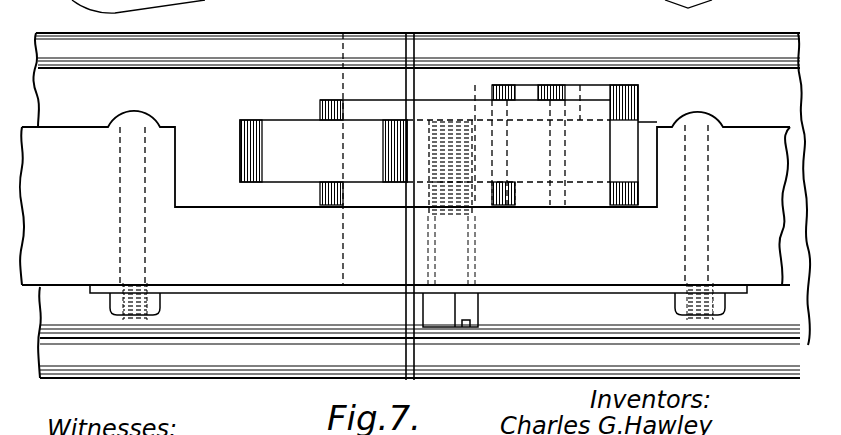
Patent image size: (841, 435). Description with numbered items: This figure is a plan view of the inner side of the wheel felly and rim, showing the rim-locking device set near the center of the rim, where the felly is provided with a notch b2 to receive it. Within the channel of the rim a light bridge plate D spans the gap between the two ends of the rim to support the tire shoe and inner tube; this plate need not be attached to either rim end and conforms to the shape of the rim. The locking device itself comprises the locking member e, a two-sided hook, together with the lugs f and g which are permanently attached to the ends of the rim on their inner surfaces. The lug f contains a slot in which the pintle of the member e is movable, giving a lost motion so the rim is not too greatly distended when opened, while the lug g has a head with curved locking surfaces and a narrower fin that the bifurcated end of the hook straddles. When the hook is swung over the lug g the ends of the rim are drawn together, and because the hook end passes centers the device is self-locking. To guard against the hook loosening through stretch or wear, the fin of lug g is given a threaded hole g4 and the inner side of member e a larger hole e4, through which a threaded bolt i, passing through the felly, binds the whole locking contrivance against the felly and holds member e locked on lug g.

The rail b is at (527, 42).
The notch b2 is at (178, 158).
The bridge plate D is at (410, 352).
The locking member e is at (430, 103).
The hole e4 is at (428, 175).
The lug f is at (323, 151).
The lug g is at (538, 85).
The threaded hole g4 is at (515, 190).
The threaded bolt i is at (458, 305).